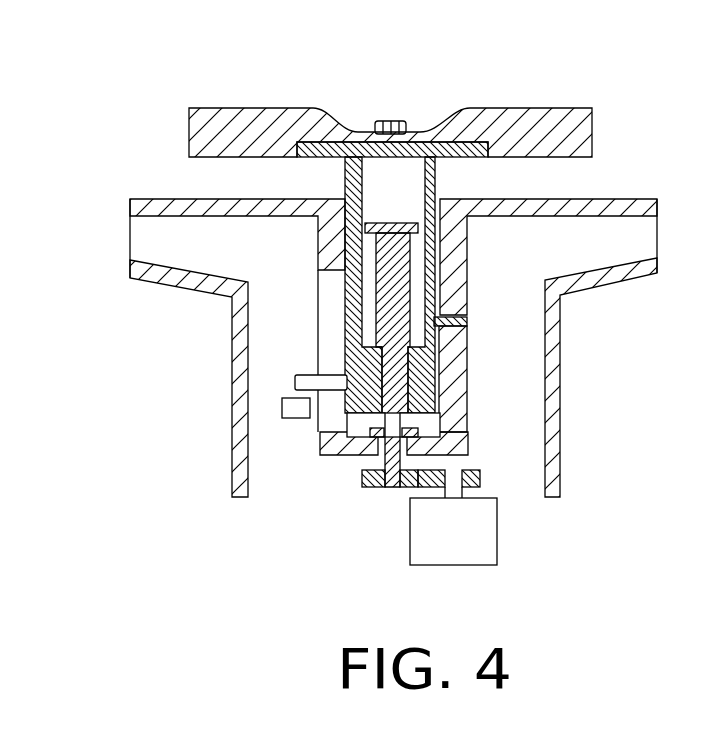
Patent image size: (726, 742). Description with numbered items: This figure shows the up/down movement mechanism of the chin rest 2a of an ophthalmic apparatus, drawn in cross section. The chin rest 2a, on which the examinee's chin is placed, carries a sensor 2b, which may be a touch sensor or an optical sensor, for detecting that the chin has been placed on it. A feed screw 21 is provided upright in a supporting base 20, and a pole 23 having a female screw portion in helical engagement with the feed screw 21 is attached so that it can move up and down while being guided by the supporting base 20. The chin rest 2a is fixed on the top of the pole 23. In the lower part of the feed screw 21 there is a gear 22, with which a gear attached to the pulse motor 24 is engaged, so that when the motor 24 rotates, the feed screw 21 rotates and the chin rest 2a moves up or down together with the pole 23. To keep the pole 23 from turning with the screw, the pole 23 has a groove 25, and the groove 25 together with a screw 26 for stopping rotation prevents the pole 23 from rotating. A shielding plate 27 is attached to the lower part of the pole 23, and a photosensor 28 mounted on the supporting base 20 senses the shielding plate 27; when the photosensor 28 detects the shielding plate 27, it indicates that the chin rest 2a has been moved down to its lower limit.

The chin rest 2a is at (555, 108).
The sensor 2b is at (400, 119).
The supporting base 20 is at (560, 198).
The feed screw 21 is at (388, 288).
The gear 22 is at (372, 488).
The pole 23 is at (440, 225).
The pulse motor 24 is at (428, 533).
The groove 25 is at (440, 398).
The screw for stopping rotation 26 is at (470, 320).
The shielding plate 27 is at (307, 376).
The photosensor 28 is at (288, 410).